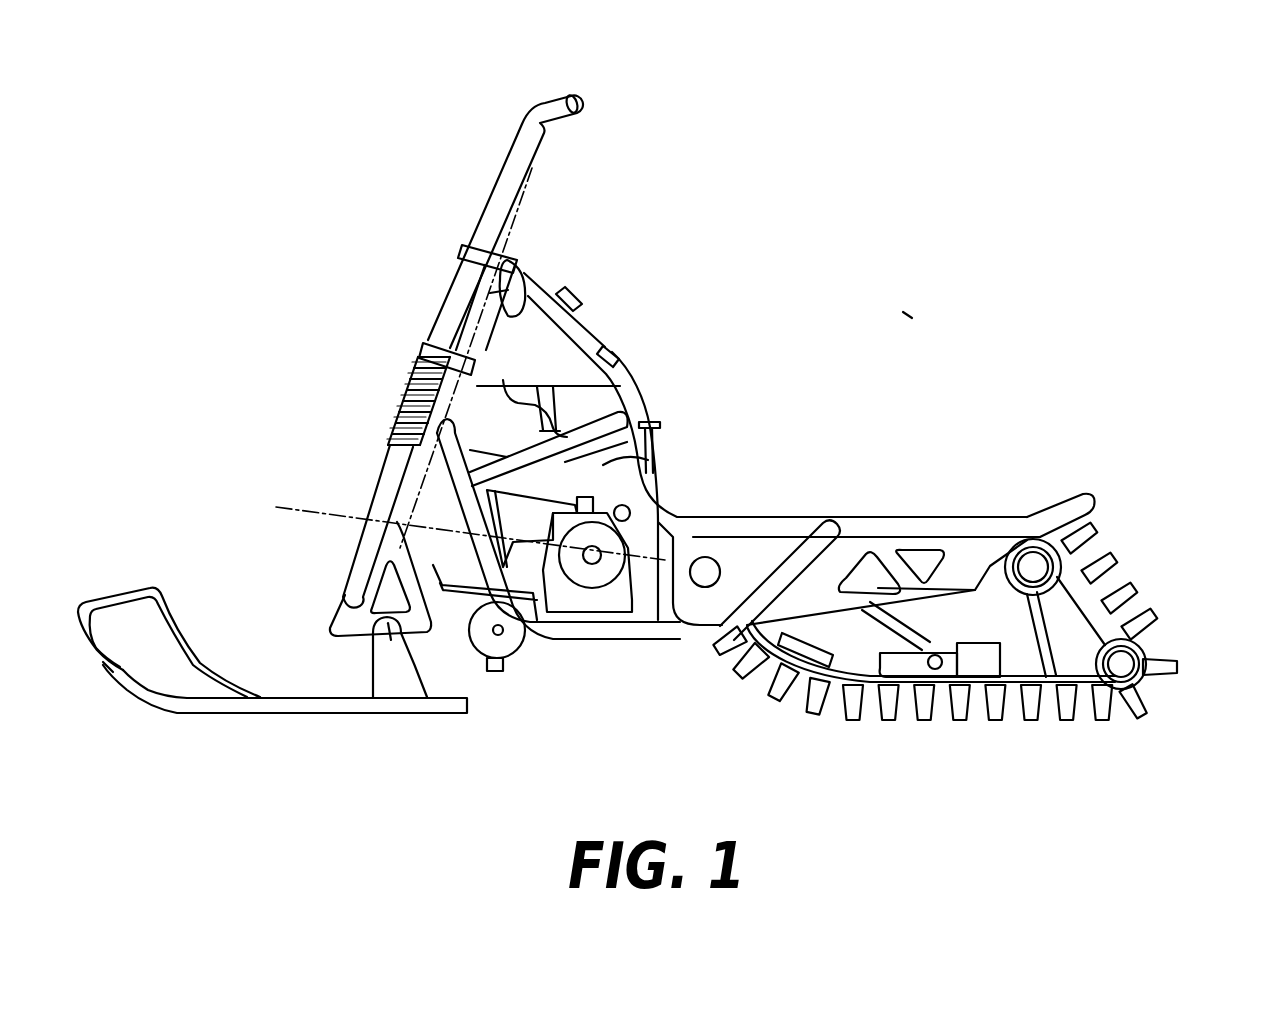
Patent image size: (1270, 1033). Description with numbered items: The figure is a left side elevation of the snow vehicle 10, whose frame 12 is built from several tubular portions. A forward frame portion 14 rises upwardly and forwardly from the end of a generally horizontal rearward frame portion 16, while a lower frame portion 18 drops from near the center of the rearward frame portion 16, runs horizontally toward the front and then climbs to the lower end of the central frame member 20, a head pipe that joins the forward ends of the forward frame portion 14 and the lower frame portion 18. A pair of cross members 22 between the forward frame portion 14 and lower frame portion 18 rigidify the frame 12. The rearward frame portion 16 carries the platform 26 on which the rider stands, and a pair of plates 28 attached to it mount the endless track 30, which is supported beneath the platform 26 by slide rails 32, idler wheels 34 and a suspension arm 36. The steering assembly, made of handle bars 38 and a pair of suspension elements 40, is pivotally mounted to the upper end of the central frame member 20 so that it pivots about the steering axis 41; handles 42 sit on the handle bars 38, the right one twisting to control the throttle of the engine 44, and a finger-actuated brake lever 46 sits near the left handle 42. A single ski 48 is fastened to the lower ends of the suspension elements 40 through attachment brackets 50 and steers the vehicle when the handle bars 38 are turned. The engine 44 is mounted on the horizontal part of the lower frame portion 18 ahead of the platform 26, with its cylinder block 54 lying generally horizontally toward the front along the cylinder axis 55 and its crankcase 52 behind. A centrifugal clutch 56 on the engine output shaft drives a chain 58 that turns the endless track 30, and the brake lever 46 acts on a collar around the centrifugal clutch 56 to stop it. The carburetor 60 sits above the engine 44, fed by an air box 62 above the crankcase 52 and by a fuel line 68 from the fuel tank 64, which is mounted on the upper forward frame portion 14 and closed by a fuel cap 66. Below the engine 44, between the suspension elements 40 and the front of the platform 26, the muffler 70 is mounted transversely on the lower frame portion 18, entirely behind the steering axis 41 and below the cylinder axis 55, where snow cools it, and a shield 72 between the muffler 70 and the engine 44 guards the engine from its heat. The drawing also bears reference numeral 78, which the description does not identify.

The snow vehicle 10 is at (908, 306).
The frame 12 is at (799, 425).
The forward frame portion 14 is at (628, 384).
The rearward frame portion 16 is at (953, 520).
The lower frame portion 18 is at (637, 637).
The central frame member 20 is at (522, 275).
The cross members 22 is at (417, 381).
The platform 26 is at (878, 515).
The plates 28 is at (823, 582).
The endless track 30 is at (1127, 586).
The slide rails 32 is at (870, 690).
The idler wheels 34 is at (1037, 563).
The suspension arm 36 is at (910, 620).
The handle bars 38 is at (506, 149).
The suspension elements 40 is at (393, 440).
The steering axis 41 is at (536, 180).
The handles 42 is at (574, 100).
The engine 44 is at (550, 578).
The brake lever 46 is at (540, 130).
The ski 48 is at (253, 703).
The attachment brackets 50 is at (373, 653).
The crankcase 52 is at (640, 508).
The cylinder block 54 is at (452, 513).
The cylinder axis 55 is at (310, 509).
The centrifugal clutch 56 is at (594, 577).
The chain 58 is at (650, 625).
The carburetor 60 is at (662, 445).
The air box 62 is at (612, 461).
The fuel tank 64 is at (612, 358).
The fuel cap 66 is at (581, 298).
The fuel line 68 is at (490, 307).
The muffler 70 is at (482, 643).
The shield 72 is at (452, 628).
The roller mount 78 is at (493, 670).